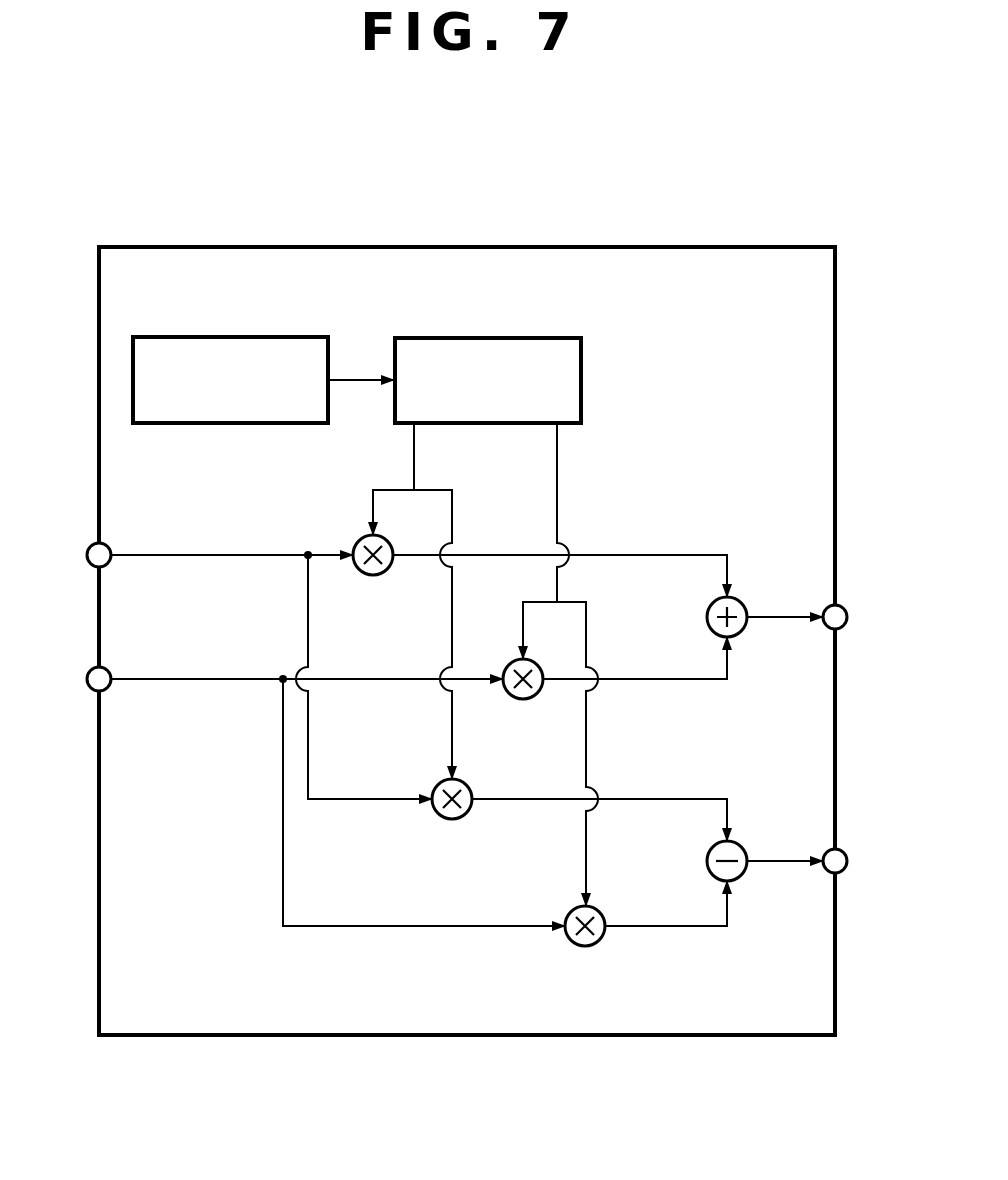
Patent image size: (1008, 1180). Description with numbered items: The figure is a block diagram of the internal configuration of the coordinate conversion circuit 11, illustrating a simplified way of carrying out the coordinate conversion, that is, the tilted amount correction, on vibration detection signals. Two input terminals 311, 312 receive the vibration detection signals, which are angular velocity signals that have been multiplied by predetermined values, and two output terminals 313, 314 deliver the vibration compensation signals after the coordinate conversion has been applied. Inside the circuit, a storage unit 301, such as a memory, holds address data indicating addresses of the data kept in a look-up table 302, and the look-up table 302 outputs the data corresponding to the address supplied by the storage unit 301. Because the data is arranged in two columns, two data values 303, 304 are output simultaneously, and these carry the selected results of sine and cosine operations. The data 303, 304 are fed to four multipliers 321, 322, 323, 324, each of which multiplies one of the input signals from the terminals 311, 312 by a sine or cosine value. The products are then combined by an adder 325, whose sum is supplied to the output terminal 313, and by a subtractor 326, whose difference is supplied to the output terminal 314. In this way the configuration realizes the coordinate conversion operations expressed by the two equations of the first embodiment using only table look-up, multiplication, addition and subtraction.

The coordinate conversion circuit 11 is at (420, 246).
The storage unit 301 is at (234, 337).
The look-up table 302 is at (491, 338).
The data 303 is at (414, 455).
The data 304 is at (558, 453).
The input terminal 311 is at (89, 566).
The input terminal 312 is at (89, 690).
The output terminal 313 is at (845, 627).
The output terminal 314 is at (845, 871).
The multiplier 321 is at (373, 576).
The multiplier 322 is at (452, 820).
The multiplier 323 is at (523, 700).
The multiplier 324 is at (585, 947).
The adder 325 is at (742, 631).
The subtractor 326 is at (742, 875).